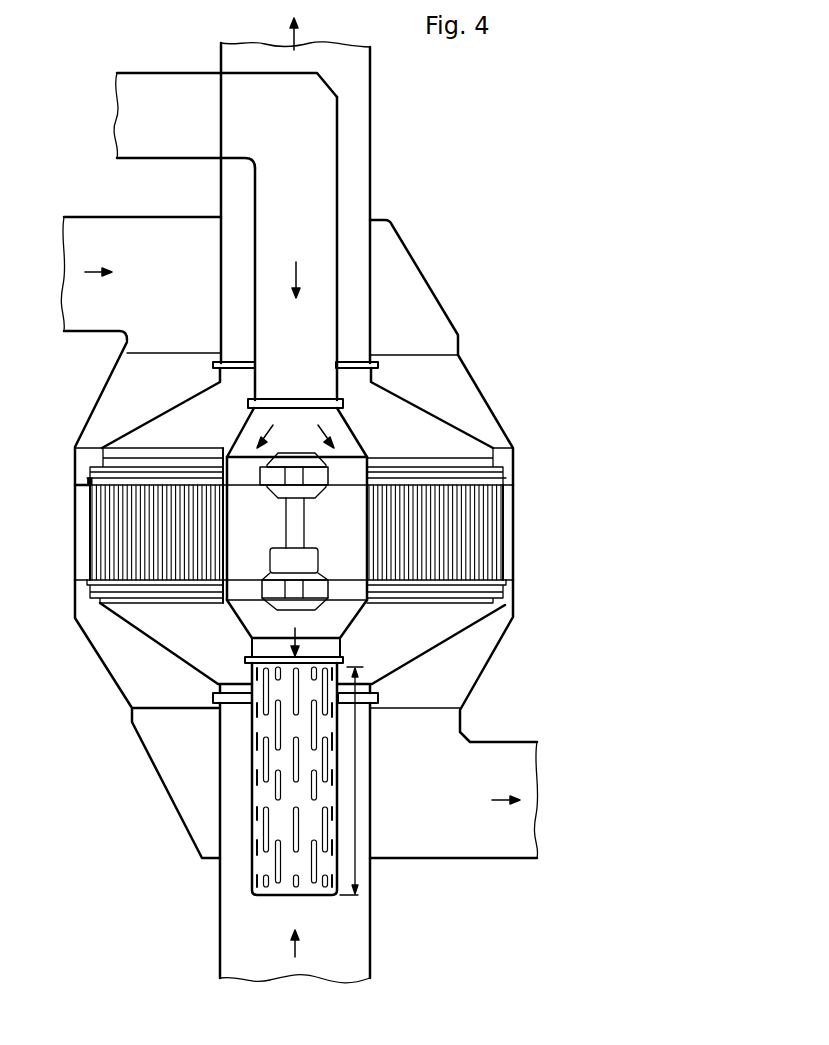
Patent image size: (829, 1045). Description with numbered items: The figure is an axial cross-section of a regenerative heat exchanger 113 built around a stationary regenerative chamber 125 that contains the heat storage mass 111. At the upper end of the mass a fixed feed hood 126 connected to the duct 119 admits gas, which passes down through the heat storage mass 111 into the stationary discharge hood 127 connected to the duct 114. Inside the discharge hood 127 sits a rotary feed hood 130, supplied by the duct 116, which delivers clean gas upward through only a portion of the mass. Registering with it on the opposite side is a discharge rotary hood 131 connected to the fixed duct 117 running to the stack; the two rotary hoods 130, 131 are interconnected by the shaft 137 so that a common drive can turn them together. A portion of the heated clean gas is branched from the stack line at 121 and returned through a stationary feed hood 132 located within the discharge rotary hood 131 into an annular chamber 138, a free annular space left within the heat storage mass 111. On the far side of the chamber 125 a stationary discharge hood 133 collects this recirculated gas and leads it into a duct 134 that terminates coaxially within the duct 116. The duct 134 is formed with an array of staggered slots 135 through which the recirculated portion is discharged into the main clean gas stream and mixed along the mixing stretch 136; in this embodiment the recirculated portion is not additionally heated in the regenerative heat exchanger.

The heat storage mass 111 is at (143, 520).
The heat exchanger 113 is at (503, 532).
The duct 114 is at (507, 740).
The duct 116 is at (372, 953).
The duct 117 is at (372, 150).
The duct 119 is at (123, 217).
The branch 121 is at (178, 72).
The regenerative chamber 125 is at (87, 542).
The feed hood 126 is at (473, 375).
The discharge hood 127 is at (122, 695).
The rotary feed hood 130 is at (365, 610).
The discharge rotary hood 131 is at (435, 417).
The stationary feed hood 132 is at (240, 435).
The stationary discharge hood 133 is at (292, 522).
The duct 134 is at (226, 782).
The slots 135 is at (277, 860).
The mixing stretch 136 is at (355, 810).
The shaft 137 is at (240, 595).
The annular chamber 138 is at (338, 545).